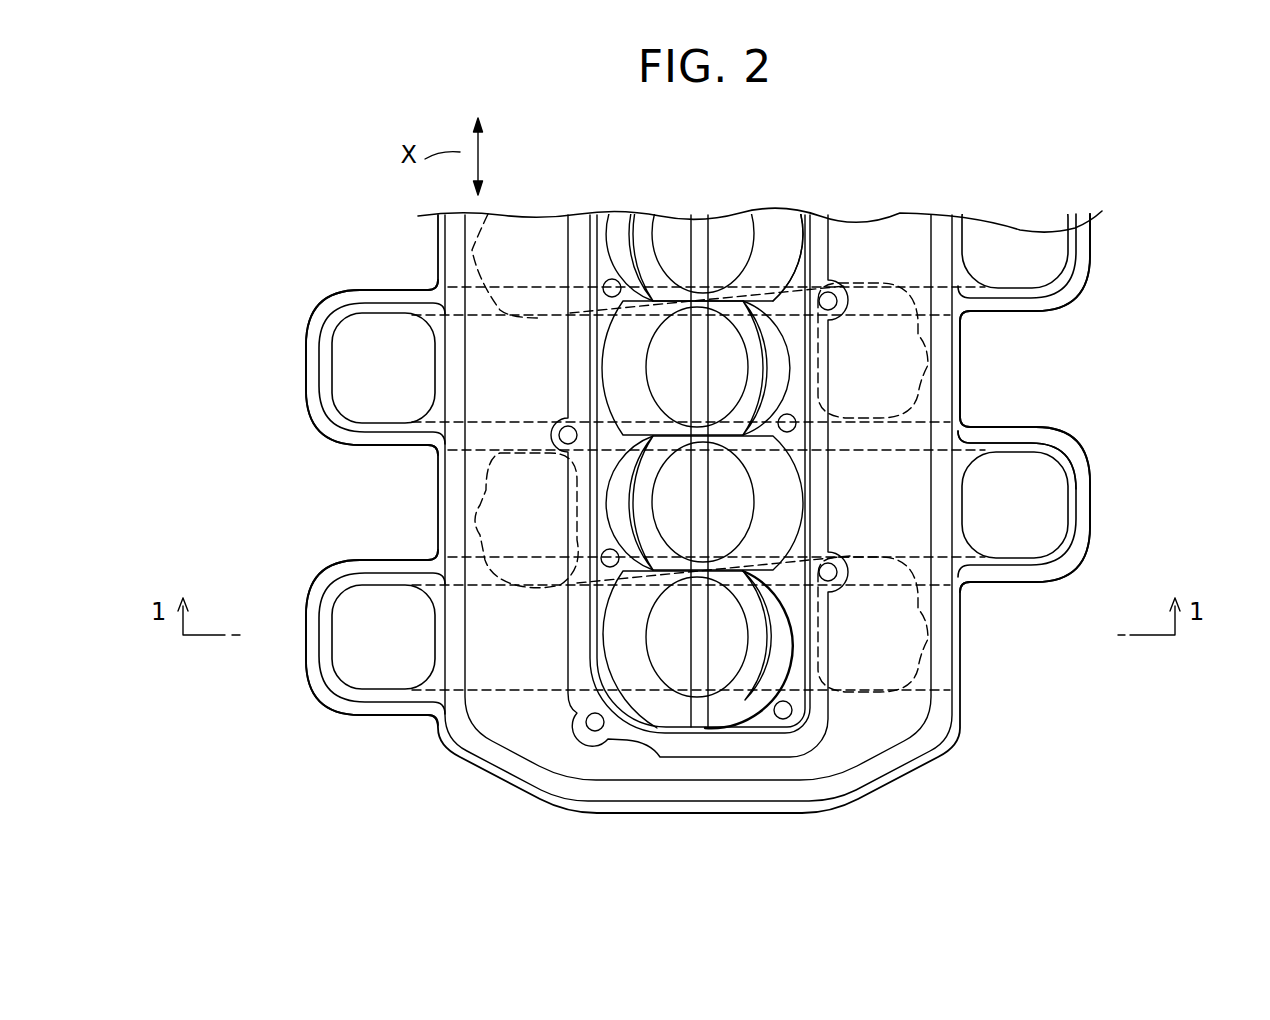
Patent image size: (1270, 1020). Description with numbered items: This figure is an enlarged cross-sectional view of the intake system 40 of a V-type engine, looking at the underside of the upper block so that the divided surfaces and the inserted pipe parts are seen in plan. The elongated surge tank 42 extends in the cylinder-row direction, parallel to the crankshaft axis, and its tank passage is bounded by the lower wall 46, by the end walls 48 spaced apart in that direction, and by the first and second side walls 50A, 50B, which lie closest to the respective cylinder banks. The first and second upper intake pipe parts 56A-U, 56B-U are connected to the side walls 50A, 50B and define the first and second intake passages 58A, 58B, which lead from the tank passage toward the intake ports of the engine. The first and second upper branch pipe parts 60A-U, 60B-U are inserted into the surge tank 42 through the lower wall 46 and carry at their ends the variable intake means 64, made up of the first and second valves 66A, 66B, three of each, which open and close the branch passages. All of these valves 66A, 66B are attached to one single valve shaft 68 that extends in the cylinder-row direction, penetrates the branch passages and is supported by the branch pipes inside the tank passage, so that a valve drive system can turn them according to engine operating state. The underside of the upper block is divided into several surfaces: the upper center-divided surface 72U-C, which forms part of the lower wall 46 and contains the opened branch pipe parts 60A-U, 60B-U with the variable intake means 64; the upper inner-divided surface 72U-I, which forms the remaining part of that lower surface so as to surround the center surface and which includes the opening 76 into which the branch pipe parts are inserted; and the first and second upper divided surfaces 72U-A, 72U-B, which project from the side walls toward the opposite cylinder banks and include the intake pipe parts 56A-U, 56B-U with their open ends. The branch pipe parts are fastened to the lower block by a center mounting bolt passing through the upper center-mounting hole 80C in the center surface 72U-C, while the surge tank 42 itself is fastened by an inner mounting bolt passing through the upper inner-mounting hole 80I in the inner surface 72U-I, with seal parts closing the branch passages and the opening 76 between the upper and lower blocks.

The intake system 40 is at (1140, 200).
The surge tank 42 is at (430, 240).
The lower wall 46 is at (505, 712).
The end wall 48 is at (622, 808).
The first side wall 50A is at (445, 495).
The second side wall 50B is at (960, 325).
The first upper intake pipe part 56A-U is at (1073, 250).
The second upper intake pipe part 56B-U is at (330, 662).
The first intake passage 58A is at (1020, 240).
The second intake passage 58B is at (362, 357).
The first upper branch pipe part 60A-U is at (778, 238).
The second upper branch pipe part 60B-U is at (617, 365).
The variable intake means 64 is at (698, 726).
The first valve 66A is at (678, 232).
The second valve 66B is at (723, 345).
The valve shaft 68 is at (712, 658).
The first upper divided surface 72U-A is at (1075, 286).
The second upper divided surface 72U-B is at (350, 298).
The upper center-divided surface 72U-C is at (793, 678).
The upper inner-divided surface 72U-I is at (517, 377).
The opening 76 is at (1028, 462).
The upper center-mounting hole 80C is at (600, 553).
The upper inner-mounting hole 80I is at (612, 280).